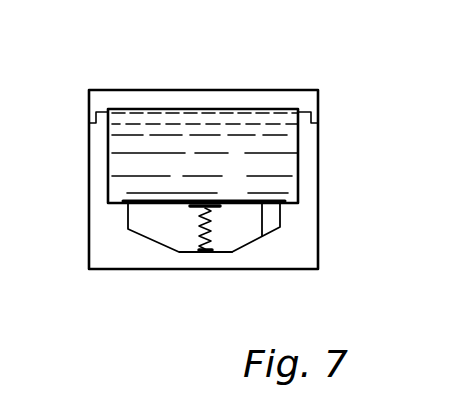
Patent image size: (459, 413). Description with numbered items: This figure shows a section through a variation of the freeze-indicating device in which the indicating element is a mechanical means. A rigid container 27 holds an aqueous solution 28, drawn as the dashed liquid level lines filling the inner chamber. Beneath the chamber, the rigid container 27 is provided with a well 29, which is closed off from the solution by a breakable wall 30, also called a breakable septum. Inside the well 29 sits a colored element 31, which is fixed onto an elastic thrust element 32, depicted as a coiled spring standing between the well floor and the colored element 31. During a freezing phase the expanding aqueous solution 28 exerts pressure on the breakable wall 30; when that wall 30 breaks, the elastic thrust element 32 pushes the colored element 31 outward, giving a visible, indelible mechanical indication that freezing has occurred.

The rigid container 27 is at (102, 233).
The aqueous solution 28 is at (258, 128).
The well 29 is at (162, 227).
The breakable wall 30 is at (262, 207).
The colored element 31 is at (217, 207).
The elastic thrust element 32 is at (200, 238).